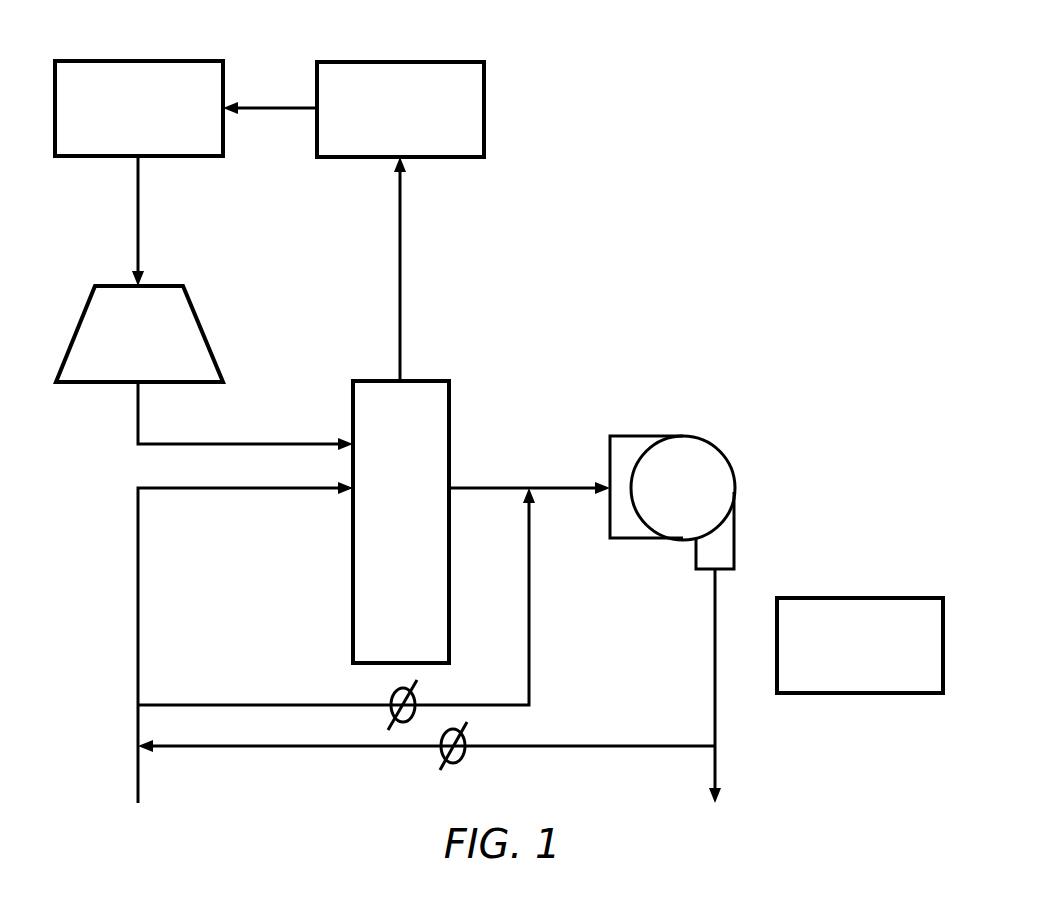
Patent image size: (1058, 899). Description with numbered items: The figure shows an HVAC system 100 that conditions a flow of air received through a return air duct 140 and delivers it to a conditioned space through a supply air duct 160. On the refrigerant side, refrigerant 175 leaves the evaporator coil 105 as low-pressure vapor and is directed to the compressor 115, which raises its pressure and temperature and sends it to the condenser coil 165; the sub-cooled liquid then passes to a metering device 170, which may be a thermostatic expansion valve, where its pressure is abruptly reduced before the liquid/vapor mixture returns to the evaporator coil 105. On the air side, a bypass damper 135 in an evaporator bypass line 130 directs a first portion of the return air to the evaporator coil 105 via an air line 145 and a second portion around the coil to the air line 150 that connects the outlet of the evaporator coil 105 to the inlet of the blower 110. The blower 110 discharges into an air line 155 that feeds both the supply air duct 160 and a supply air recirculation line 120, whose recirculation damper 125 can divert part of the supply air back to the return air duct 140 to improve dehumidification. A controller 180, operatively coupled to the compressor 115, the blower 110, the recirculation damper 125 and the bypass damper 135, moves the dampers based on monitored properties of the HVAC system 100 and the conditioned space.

The HVAC system 100 is at (716, 104).
The evaporator coil 105 is at (353, 552).
The blower 110 is at (706, 440).
The compressor 115 is at (485, 108).
The supply air recirculation line 120 is at (593, 745).
The recirculation damper 125 is at (460, 762).
The evaporator bypass line 130 is at (530, 619).
The bypass damper 135 is at (395, 690).
The return air duct 140 is at (138, 764).
The air line 145 is at (138, 602).
The air line 150 is at (505, 487).
The air line 155 is at (715, 656).
The supply air duct 160 is at (716, 762).
The condenser coil 165 is at (170, 61).
The metering device 170 is at (205, 310).
The refrigerant 175 is at (268, 113).
The controller 180 is at (835, 694).